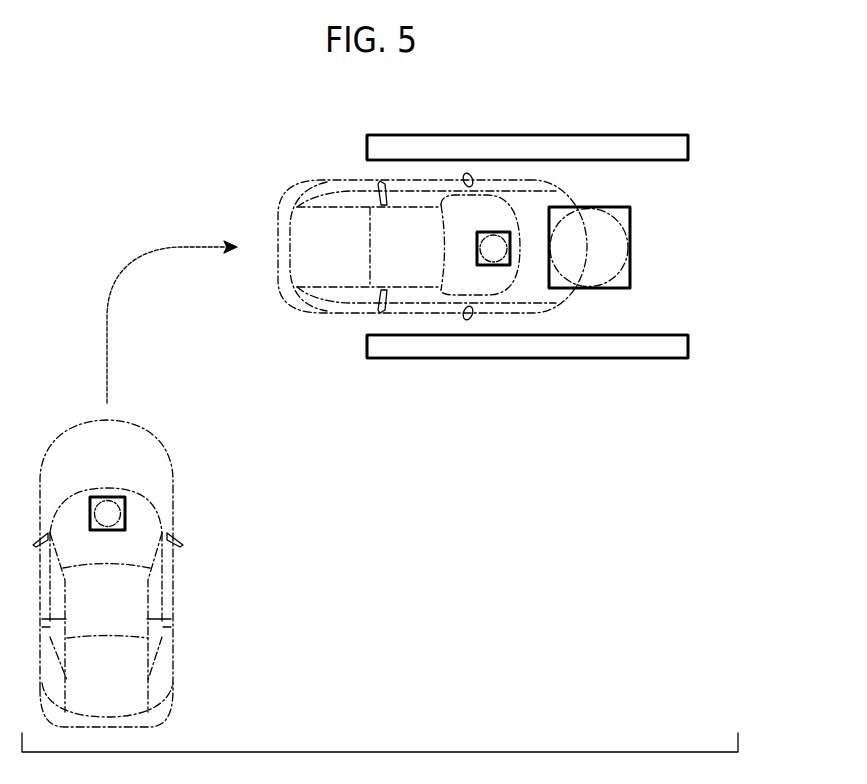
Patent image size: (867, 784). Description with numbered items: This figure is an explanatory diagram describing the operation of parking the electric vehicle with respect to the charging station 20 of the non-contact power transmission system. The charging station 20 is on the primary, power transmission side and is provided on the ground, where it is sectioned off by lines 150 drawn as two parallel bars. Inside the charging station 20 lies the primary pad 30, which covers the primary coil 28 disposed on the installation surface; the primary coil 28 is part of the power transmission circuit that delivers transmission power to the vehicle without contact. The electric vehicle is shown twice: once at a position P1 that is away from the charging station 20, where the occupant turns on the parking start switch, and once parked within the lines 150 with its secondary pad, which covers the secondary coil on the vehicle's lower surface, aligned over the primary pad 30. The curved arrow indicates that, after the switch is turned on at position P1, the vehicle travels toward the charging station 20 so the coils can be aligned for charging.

The charging station 20 is at (674, 289).
The primary coil 28 is at (615, 244).
The primary pad 30 is at (578, 207).
The lines 150 is at (452, 135).
The position P1 is at (195, 588).